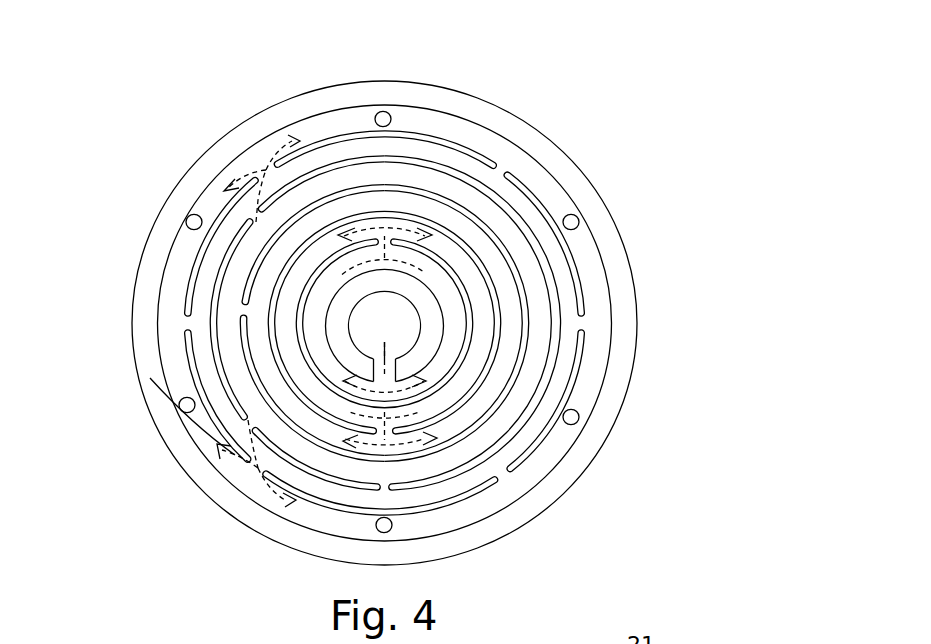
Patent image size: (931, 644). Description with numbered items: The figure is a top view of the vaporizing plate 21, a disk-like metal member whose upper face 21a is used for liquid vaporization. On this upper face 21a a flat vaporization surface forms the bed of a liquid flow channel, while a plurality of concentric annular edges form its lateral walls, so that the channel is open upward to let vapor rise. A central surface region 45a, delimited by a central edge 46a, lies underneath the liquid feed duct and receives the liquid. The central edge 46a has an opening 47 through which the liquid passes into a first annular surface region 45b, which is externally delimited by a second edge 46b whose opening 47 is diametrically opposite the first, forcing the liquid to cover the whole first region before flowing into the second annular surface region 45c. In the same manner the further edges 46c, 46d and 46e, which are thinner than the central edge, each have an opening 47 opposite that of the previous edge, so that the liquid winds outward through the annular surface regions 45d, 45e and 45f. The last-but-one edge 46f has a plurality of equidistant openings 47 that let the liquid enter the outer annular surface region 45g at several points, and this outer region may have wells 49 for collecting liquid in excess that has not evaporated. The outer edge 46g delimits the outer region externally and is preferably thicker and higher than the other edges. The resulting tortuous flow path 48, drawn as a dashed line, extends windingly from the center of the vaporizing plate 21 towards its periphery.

The vaporizing plate 21 is at (537, 100).
The upper face 21a is at (457, 103).
The central surface region 45a is at (450, 276).
The first annular surface region 45b is at (486, 264).
The second annular surface region 45c is at (518, 284).
The annular surface region 45d is at (550, 273).
The annular surface region 45e is at (547, 292).
The annular surface region 45f is at (565, 308).
The outer annular surface region 45g is at (597, 330).
The central edge 46a is at (258, 177).
The second edge 46b is at (220, 215).
The annular edge 46c is at (358, 292).
The annular edge 46d is at (248, 307).
The annular edge 46e is at (213, 328).
The last-but-one edge 46f is at (185, 350).
The outer edge 46g is at (150, 378).
The opening 47 is at (391, 385).
The flow path 48 is at (367, 214).
The well 49 is at (577, 423).